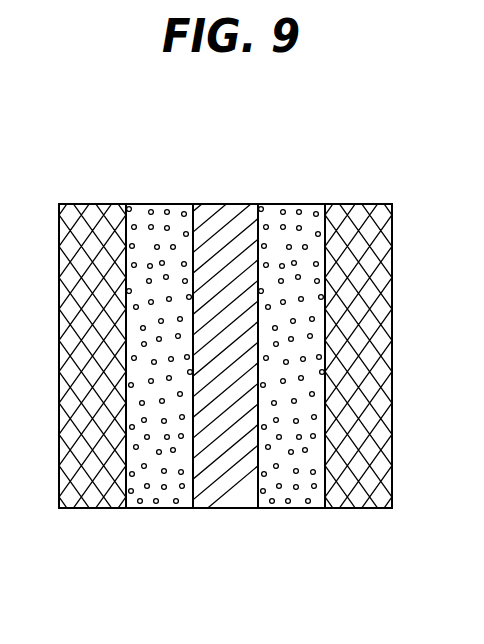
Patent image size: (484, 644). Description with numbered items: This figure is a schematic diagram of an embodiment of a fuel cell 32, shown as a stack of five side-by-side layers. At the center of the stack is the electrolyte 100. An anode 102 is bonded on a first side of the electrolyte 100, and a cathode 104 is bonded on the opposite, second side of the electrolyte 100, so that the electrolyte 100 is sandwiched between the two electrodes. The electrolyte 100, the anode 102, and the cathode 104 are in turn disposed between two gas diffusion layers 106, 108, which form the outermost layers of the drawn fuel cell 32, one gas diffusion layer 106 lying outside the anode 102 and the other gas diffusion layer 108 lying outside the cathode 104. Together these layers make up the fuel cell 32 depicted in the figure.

The fuel cell 32 is at (360, 144).
The electrolyte 100 is at (228, 203).
The anode 102 is at (162, 510).
The cathode 104 is at (285, 510).
The gas diffusion layer 106 is at (92, 203).
The gas diffusion layer 108 is at (368, 510).